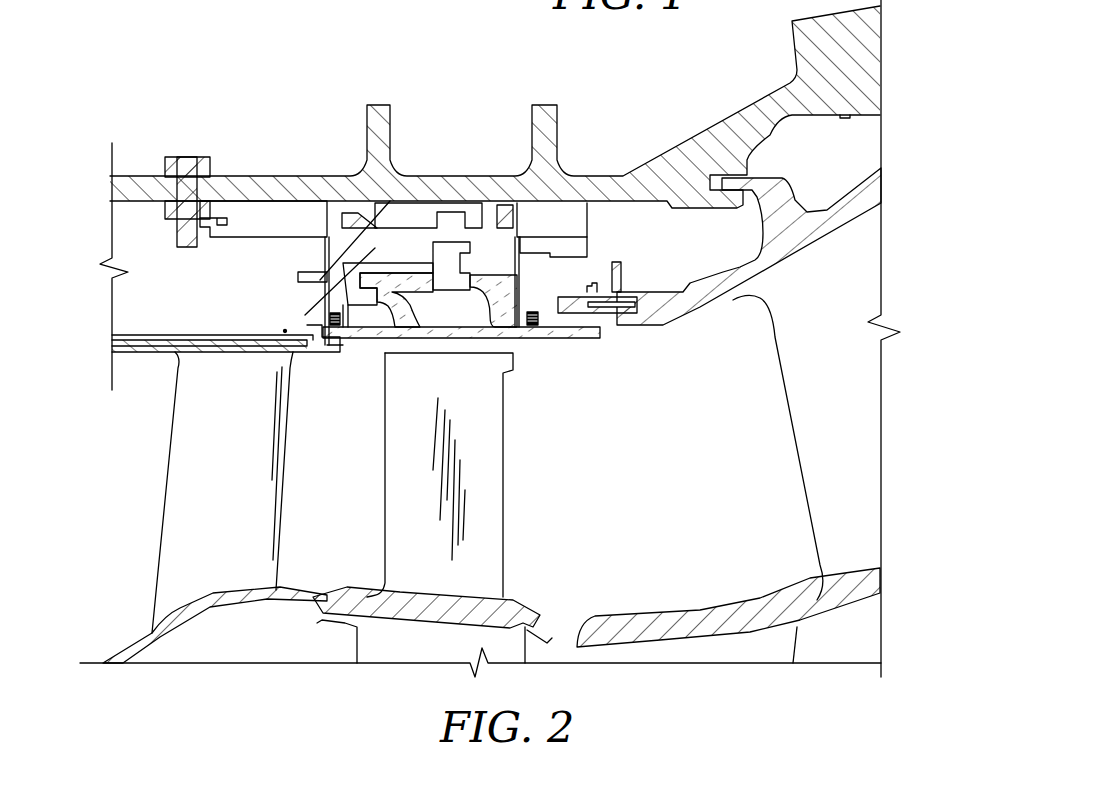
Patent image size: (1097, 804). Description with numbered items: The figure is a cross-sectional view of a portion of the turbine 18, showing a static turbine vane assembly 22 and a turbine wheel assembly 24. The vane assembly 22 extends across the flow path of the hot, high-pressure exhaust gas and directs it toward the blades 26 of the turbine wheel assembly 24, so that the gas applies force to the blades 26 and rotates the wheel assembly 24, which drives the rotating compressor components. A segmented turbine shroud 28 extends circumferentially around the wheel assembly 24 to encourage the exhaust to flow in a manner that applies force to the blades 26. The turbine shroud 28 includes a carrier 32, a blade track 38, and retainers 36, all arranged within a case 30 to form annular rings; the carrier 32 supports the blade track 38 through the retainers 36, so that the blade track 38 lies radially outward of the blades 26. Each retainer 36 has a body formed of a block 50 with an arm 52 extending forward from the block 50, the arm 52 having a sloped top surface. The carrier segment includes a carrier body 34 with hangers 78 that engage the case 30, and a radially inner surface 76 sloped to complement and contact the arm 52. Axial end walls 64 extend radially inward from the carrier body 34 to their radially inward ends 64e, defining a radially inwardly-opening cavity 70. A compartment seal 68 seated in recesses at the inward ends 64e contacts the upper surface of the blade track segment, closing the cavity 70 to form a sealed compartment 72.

The turbine 18 is at (233, 63).
The static turbine vane assembly 22 is at (160, 498).
The turbine wheel assembly 24 is at (348, 645).
The blades 26 is at (506, 449).
The segmented turbine shroud 28 is at (628, 243).
The case 30 is at (681, 186).
The carrier 32 is at (306, 231).
The carrier body 34 is at (414, 226).
The retainer 36 is at (489, 252).
The blade track 38 is at (548, 342).
The block 50 is at (444, 274).
The arm 52 is at (394, 258).
The axial end walls 64 is at (326, 308).
The radially inward ends of the axial end walls 64e is at (285, 332).
The compartment seal 68 is at (277, 368).
The radially inwardly-opening cavity 70 is at (428, 298).
The sealed compartment 72 is at (396, 300).
The radially inner surface 76 is at (375, 250).
The hangers 78 is at (498, 216).